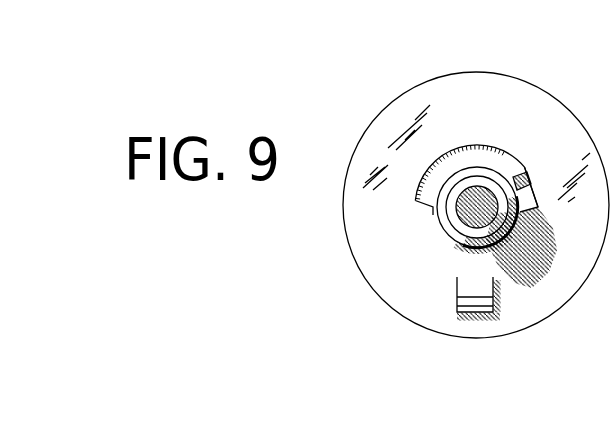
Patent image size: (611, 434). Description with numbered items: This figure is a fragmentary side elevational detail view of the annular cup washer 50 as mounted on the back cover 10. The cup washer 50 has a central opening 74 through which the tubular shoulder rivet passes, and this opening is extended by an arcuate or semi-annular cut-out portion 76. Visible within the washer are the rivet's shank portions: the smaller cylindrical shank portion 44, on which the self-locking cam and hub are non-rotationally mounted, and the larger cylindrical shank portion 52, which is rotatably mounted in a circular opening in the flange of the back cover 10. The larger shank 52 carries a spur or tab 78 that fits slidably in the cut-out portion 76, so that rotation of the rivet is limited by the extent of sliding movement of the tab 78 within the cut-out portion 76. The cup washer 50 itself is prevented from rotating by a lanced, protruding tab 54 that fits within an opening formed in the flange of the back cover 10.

The back cover 10 is at (422, 35).
The annular cup washer 50 is at (379, 104).
The smaller cylindrical shank portion 44 is at (461, 177).
The larger cylindrical shank portion 52 is at (482, 168).
The central opening 74 is at (434, 226).
The arcuate or semi-annular cut-out portion 76 is at (510, 165).
The tab 78 is at (524, 174).
The lanced, protruding tab 54 is at (460, 291).